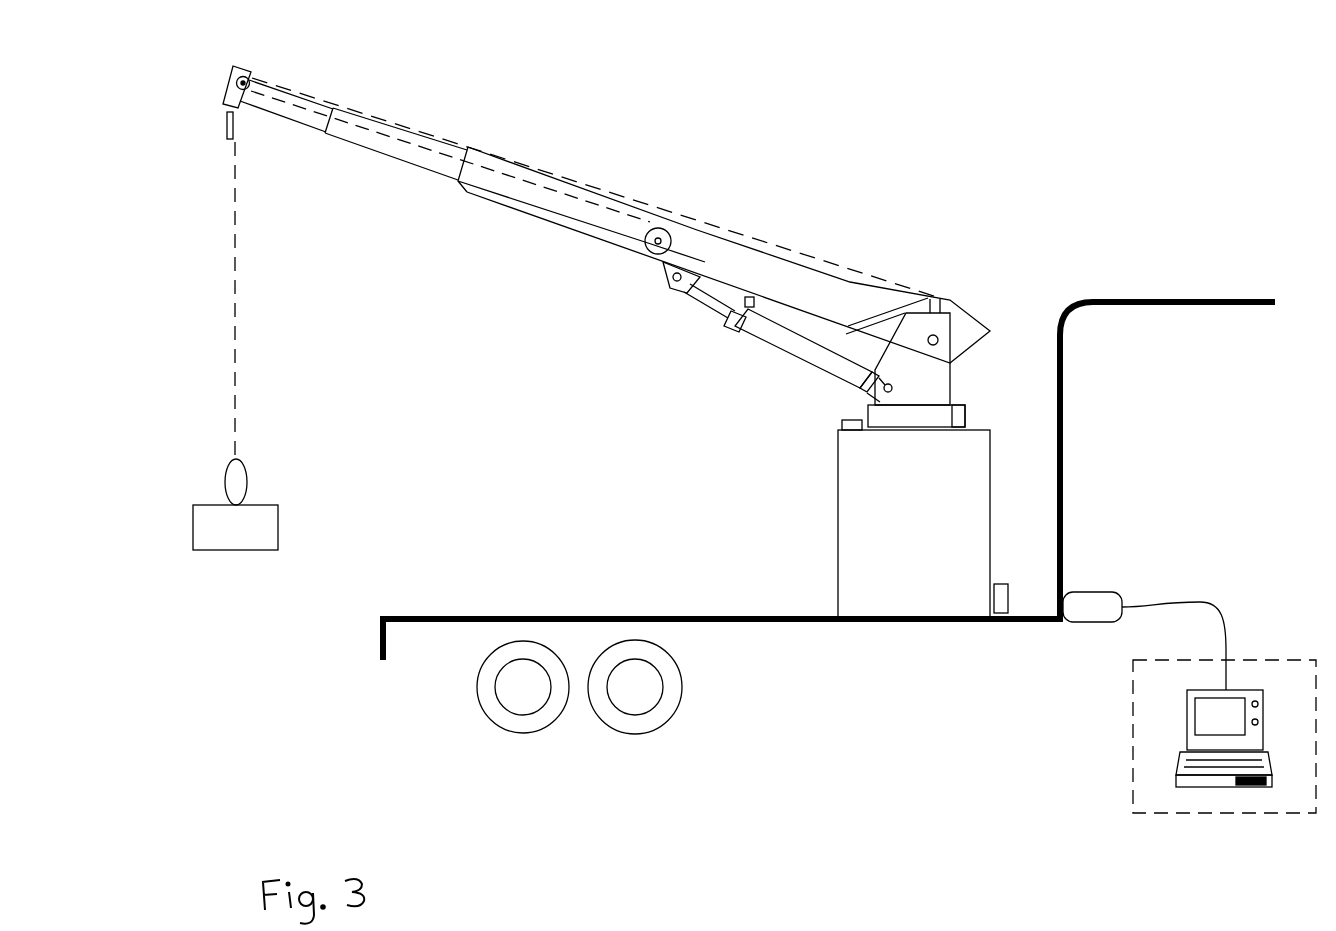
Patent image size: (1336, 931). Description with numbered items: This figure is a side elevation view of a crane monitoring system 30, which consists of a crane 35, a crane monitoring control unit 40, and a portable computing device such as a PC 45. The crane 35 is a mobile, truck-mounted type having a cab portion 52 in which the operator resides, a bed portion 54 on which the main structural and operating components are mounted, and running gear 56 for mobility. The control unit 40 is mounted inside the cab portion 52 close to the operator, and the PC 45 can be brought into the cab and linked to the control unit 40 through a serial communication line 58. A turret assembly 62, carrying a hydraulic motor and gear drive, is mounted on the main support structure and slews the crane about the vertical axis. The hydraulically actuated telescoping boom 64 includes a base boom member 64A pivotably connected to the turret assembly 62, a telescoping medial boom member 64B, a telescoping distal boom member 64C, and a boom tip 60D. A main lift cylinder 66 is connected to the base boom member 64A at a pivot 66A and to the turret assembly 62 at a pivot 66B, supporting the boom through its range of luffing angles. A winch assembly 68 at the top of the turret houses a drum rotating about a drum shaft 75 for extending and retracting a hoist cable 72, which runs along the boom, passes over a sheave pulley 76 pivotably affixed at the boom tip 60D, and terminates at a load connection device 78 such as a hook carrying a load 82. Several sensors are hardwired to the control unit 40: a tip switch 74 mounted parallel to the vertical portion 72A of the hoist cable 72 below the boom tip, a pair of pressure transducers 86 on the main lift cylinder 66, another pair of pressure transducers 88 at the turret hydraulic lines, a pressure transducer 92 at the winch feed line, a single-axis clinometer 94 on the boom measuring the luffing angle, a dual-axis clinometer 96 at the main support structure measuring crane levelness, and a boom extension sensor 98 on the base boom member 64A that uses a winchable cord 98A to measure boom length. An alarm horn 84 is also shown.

The crane monitoring system 30 is at (1103, 106).
The crane 35 is at (488, 222).
The crane monitoring control unit 40 is at (1090, 626).
The PC 45 is at (1222, 815).
The cab portion 52 is at (1200, 302).
The bed portion 54 is at (815, 622).
The running gear 56 is at (494, 718).
The serial communication line 58 is at (1208, 600).
The boom tip pivot block 60D is at (230, 94).
The turret assembly 62 is at (912, 382).
The telescoping crane boom 64 is at (785, 285).
The base boom member 64A is at (545, 226).
The medial boom member 64B is at (393, 160).
The distal boom member 64C is at (287, 116).
The main lift cylinder 66 is at (772, 355).
The pivot 66A is at (675, 283).
The pivot 66B is at (884, 393).
The winch assembly 68 is at (949, 300).
The hoist cable 72 is at (722, 229).
The vertical portion of hoist cable 72A is at (240, 378).
The tip switch 74 is at (224, 131).
The drum shaft 75 is at (940, 337).
The sheave pulley 76 is at (249, 79).
The load connection device 78 is at (246, 470).
The load 82 is at (279, 527).
The alarm horn 84 is at (1003, 585).
The pressure transducers 86 is at (733, 328).
The pressure transducers 88 is at (957, 408).
The pressure transducer 92 is at (935, 299).
The single-axis clinometer 94 is at (740, 310).
The dual-axis clinometer 96 is at (838, 430).
The boom extension sensor 98 is at (660, 226).
The winchable cord 98A is at (447, 158).